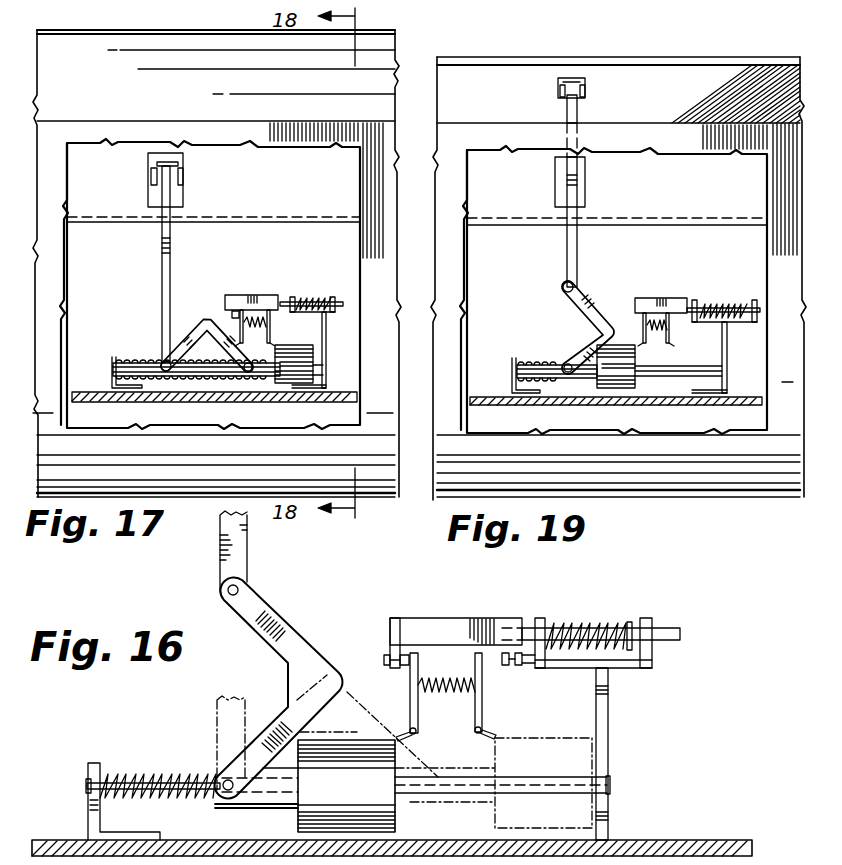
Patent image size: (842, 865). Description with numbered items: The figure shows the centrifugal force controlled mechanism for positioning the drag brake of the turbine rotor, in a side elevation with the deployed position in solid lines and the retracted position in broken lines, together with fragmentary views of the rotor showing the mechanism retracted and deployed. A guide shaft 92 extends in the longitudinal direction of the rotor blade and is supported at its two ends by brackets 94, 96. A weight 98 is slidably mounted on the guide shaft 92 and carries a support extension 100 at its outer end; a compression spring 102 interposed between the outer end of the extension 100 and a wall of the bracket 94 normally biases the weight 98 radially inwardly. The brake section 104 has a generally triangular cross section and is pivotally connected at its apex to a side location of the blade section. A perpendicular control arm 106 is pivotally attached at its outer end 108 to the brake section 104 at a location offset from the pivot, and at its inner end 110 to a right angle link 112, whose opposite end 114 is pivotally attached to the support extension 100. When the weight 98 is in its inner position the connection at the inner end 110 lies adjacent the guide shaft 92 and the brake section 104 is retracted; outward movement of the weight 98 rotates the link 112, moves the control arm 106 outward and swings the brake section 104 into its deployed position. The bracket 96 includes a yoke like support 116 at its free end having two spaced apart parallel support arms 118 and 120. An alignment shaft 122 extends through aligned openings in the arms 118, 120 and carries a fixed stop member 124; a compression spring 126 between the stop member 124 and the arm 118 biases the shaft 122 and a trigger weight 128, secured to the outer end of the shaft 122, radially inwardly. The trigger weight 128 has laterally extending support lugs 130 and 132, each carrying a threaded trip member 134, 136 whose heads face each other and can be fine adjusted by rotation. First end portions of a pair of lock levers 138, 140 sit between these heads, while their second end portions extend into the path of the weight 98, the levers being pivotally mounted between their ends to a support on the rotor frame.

In FIG. 17, the guide shaft 92 is at (212, 364).
In FIG. 19, the guide shaft 92 is at (683, 370).
In FIG. 16, the guide shaft 92 is at (575, 778).
In FIG. 16, the bracket 94 is at (88, 812).
In FIG. 16, the bracket 96 is at (608, 713).
In FIG. 17, the weight 98 is at (298, 362).
In FIG. 19, the weight 98 is at (612, 378).
In FIG. 16, the weight 98 is at (392, 808).
In FIG. 16, the support extension 100 is at (268, 788).
In FIG. 16, the compression spring 102 is at (130, 773).
In FIG. 17, the brake section 104 is at (388, 82).
In FIG. 19, the brake section 104 is at (453, 107).
In FIG. 17, the control arm 106 is at (171, 243).
In FIG. 19, the control arm 106 is at (566, 249).
In FIG. 16, the control arm 106 is at (244, 531).
In FIG. 17, the outer end 108 is at (184, 178).
In FIG. 19, the outer end 108 is at (587, 92).
In FIG. 17, the inner end 110 is at (162, 361).
In FIG. 19, the inner end 110 is at (563, 290).
In FIG. 16, the inner end 110 is at (249, 590).
In FIG. 17, the right angle link 112 is at (178, 356).
In FIG. 19, the right angle link 112 is at (592, 300).
In FIG. 16, the right angle link 112 is at (290, 637).
In FIG. 16, the opposite end 114 is at (221, 794).
In FIG. 16, the yoke like support 116 is at (615, 676).
In FIG. 16, the support arm 118 is at (540, 618).
In FIG. 16, the support arm 120 is at (655, 620).
In FIG. 16, the alignment shaft 122 is at (680, 634).
In FIG. 16, the stop member 124 is at (631, 622).
In FIG. 16, the compression spring 126 is at (585, 622).
In FIG. 16, the trigger weight 128 is at (430, 619).
In FIG. 16, the support lug 130 is at (388, 643).
In FIG. 16, the support lug 132 is at (527, 662).
In FIG. 16, the trip member 134 is at (405, 647).
In FIG. 16, the trip member 136 is at (505, 668).
In FIG. 16, the lock lever 138 is at (418, 722).
In FIG. 16, the lock lever 140 is at (477, 718).